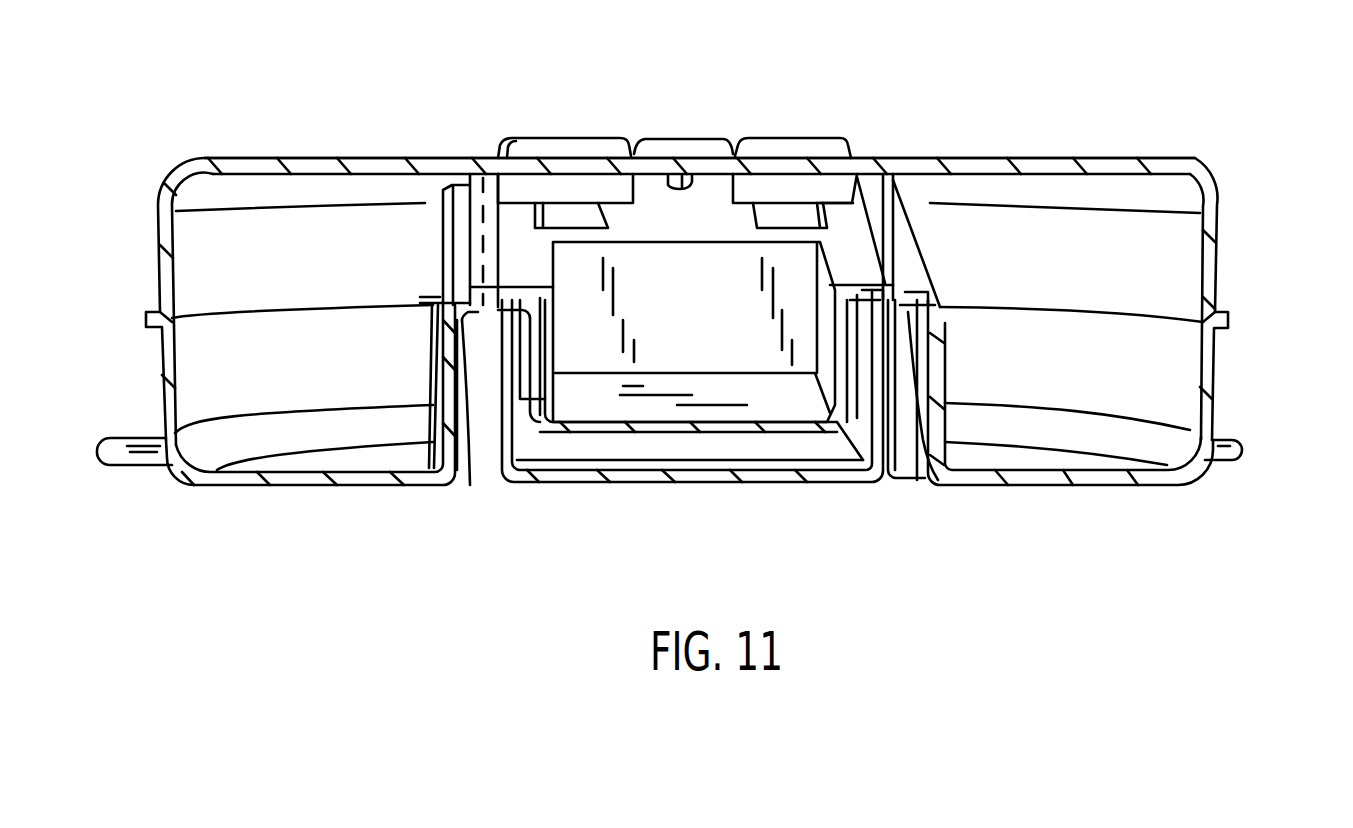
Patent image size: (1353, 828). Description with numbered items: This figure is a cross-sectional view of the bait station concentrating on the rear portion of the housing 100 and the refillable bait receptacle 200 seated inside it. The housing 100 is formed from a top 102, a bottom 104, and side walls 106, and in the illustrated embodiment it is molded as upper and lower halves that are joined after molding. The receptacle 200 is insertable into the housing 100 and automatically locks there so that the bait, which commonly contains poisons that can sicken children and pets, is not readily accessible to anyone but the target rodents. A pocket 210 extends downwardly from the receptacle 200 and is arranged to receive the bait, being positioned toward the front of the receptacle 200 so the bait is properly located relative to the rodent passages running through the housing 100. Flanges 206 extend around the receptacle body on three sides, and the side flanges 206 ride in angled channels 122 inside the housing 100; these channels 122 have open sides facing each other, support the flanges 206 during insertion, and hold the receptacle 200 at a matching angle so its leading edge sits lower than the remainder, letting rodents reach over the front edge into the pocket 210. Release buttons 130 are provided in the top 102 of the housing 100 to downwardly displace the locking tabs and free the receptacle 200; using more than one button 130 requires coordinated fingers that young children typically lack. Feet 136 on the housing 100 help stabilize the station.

The housing 100 is at (1310, 122).
The top 102 is at (1090, 158).
The bottom 104 is at (1050, 483).
The side walls 106 is at (1220, 260).
The angled channels 122 is at (487, 312).
The release buttons 130 is at (762, 145).
The feet 136 is at (102, 457).
The refillable bait receptacle 200 is at (587, 423).
The flanges 206 is at (860, 300).
The pocket 210 is at (708, 390).